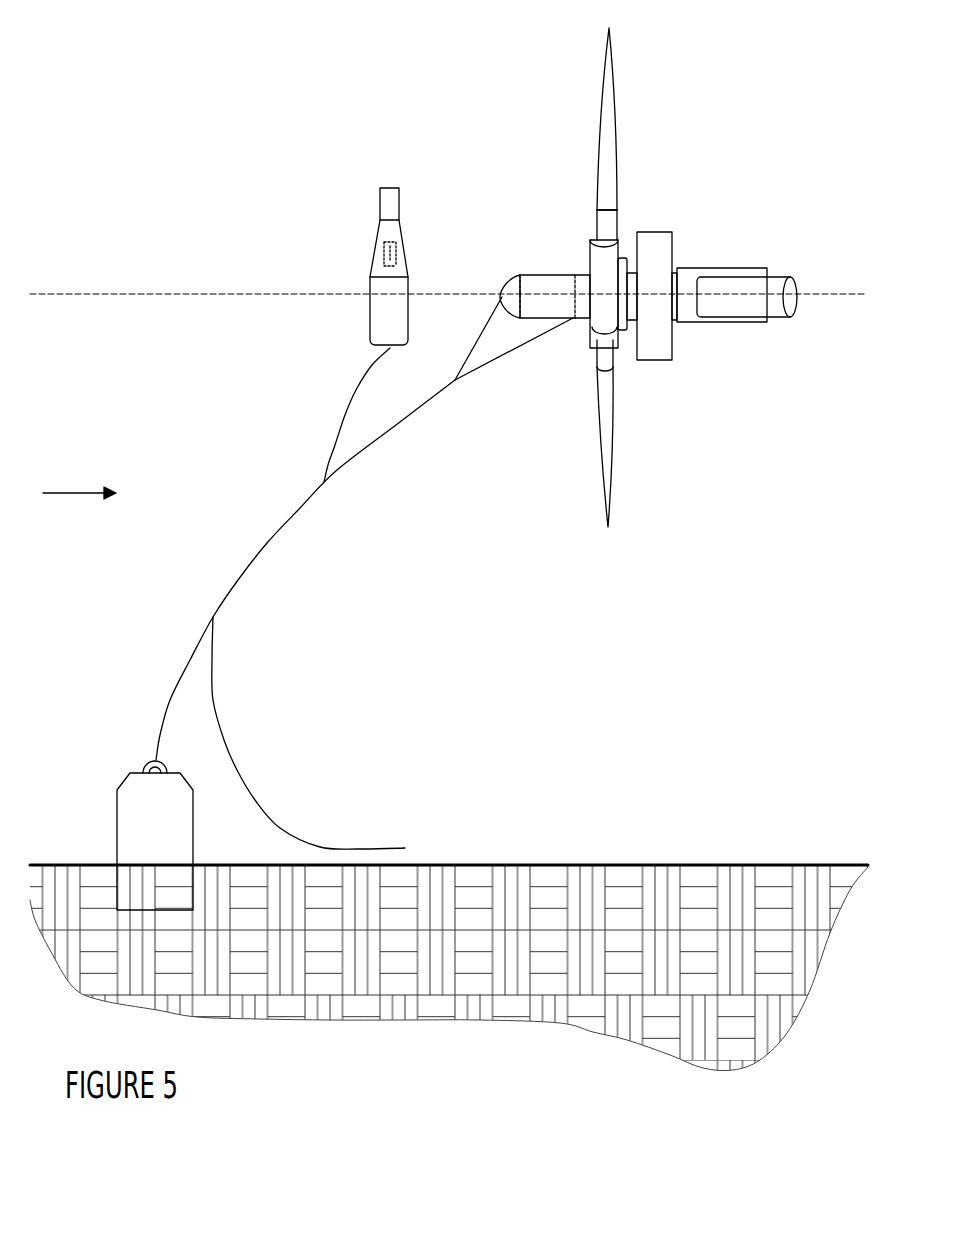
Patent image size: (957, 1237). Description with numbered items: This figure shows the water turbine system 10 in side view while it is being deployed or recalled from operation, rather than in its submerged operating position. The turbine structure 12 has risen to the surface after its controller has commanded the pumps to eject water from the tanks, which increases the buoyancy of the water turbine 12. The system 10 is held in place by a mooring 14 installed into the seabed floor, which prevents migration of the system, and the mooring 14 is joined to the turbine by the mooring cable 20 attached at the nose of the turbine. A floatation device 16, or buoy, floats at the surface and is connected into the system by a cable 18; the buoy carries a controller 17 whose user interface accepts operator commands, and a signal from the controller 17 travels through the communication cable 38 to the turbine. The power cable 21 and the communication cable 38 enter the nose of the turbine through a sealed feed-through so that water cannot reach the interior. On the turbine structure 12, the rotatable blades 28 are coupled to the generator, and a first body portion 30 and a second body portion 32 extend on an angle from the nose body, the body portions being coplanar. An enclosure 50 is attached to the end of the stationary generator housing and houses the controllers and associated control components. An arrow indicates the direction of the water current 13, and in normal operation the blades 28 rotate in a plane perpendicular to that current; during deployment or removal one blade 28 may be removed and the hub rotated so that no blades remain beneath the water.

The water turbine system 10 is at (160, 112).
The turbine structure 12 is at (670, 288).
The direction of the water current 13 is at (87, 493).
The mooring 14 is at (128, 778).
The floatation device 16 is at (378, 237).
The controller 17 is at (377, 247).
The cable 18 is at (343, 425).
The mooring cable 20 is at (268, 535).
The power cable 21 is at (237, 770).
The rotatable blades 28 is at (613, 473).
The first body portion 30 is at (758, 298).
The second body portion 32 is at (770, 268).
The communication cable 38 is at (477, 335).
The enclosure 50 is at (690, 322).